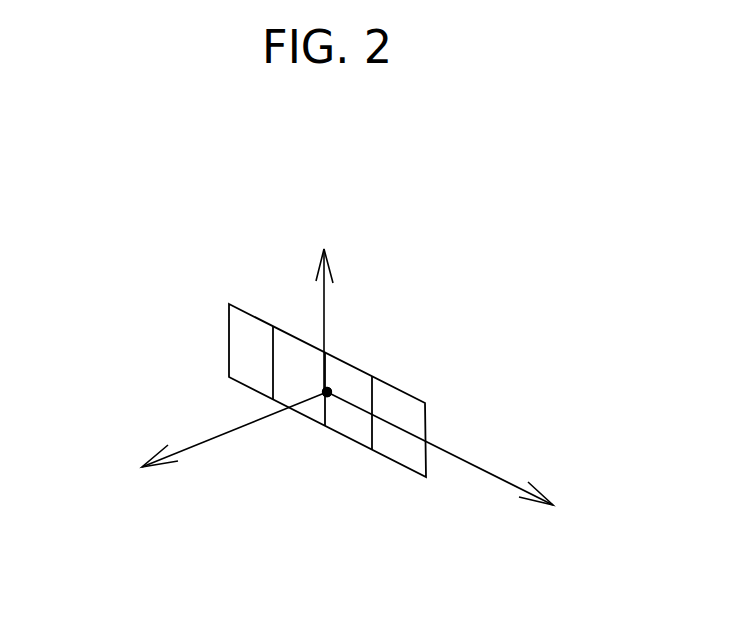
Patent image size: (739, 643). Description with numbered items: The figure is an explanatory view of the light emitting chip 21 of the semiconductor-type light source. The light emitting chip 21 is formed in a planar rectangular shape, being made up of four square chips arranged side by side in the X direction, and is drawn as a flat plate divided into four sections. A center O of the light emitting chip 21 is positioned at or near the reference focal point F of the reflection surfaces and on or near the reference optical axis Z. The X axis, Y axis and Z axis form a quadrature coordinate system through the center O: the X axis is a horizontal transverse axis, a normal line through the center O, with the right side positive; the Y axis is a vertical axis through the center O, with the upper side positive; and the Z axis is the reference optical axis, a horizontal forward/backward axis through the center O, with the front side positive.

The light emitting chip 21 is at (250, 315).
The center of the light emitting chip O is at (327, 392).
The reference focal point F is at (399, 322).
The X axis X is at (210, 452).
The Y axis Y is at (322, 294).
The Z axis Z is at (463, 468).